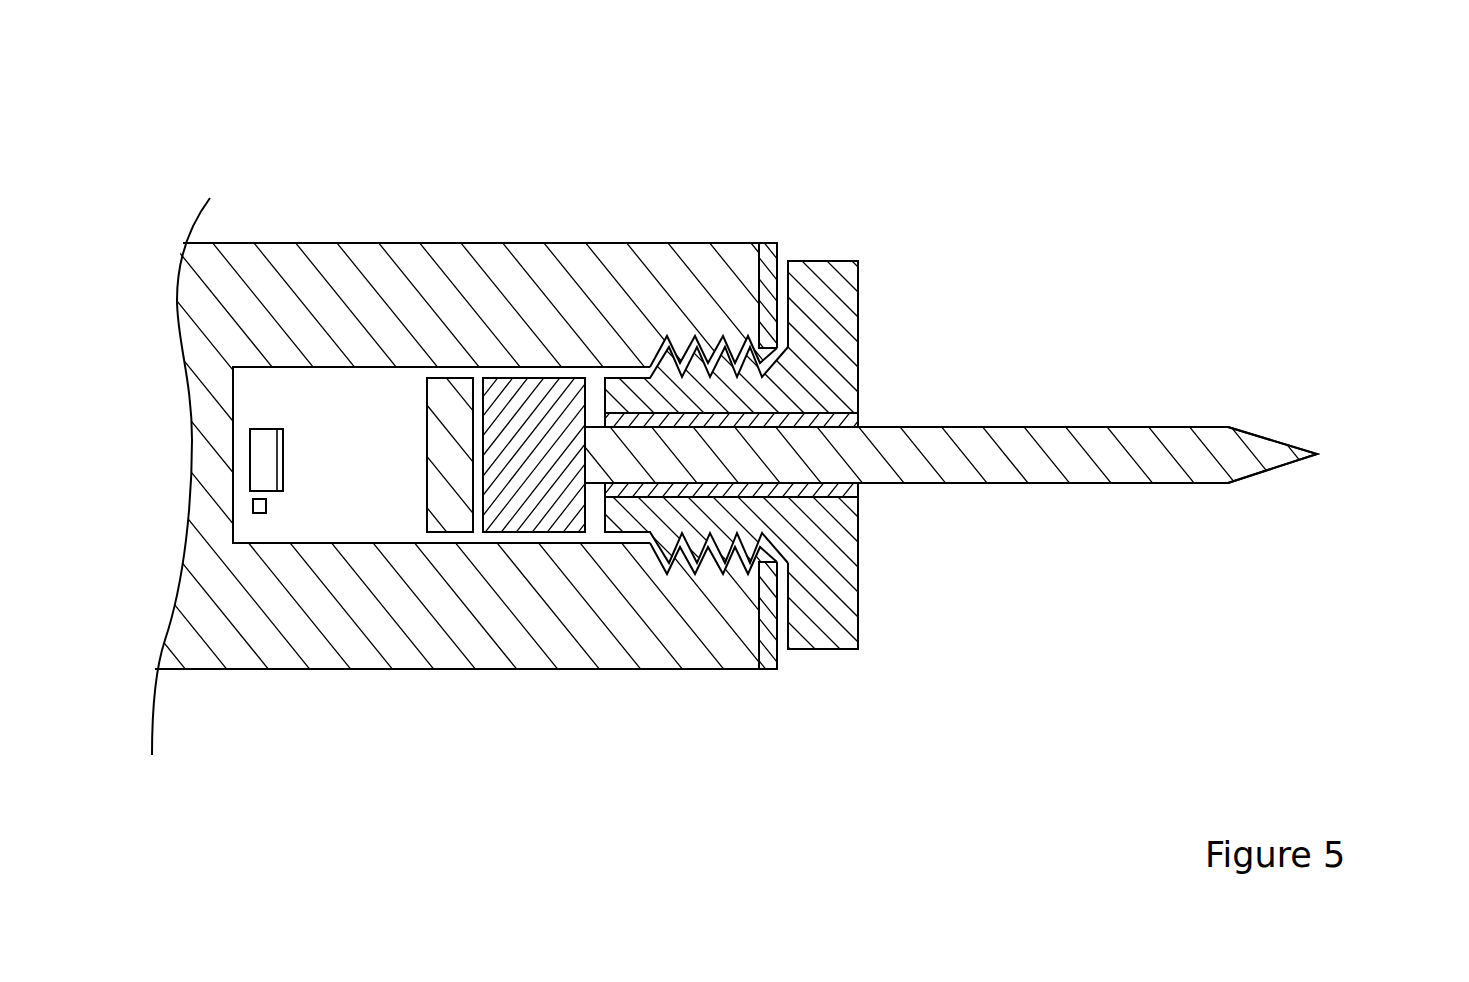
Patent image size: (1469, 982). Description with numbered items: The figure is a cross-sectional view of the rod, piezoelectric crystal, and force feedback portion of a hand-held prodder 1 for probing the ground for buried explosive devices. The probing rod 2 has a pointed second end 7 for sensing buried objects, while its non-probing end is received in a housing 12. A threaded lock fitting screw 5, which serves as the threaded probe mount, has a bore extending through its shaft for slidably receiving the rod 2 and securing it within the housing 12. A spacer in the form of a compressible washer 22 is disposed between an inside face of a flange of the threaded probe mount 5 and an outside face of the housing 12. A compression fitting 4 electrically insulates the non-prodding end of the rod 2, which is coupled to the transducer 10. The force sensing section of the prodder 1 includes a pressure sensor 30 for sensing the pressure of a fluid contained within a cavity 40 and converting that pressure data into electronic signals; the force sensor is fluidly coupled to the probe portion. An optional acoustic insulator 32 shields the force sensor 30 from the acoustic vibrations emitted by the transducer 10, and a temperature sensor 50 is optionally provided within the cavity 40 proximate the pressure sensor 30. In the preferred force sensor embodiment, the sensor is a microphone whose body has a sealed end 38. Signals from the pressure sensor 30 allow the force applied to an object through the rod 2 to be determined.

The prodder 1 is at (943, 316).
The probing rod 2 is at (987, 426).
The compression fitting 4 is at (860, 490).
The threaded lock fitting screw 5 is at (860, 603).
The pointed second end 7 is at (1280, 436).
The transducer 10 is at (525, 378).
The housing 12 is at (437, 243).
The compressible washer 22 is at (778, 663).
The pressure sensor 30 is at (263, 428).
The acoustic insulator 32 is at (453, 533).
The sealed end 38 is at (252, 670).
The cavity 40 is at (343, 502).
The temperature sensor 50 is at (267, 514).